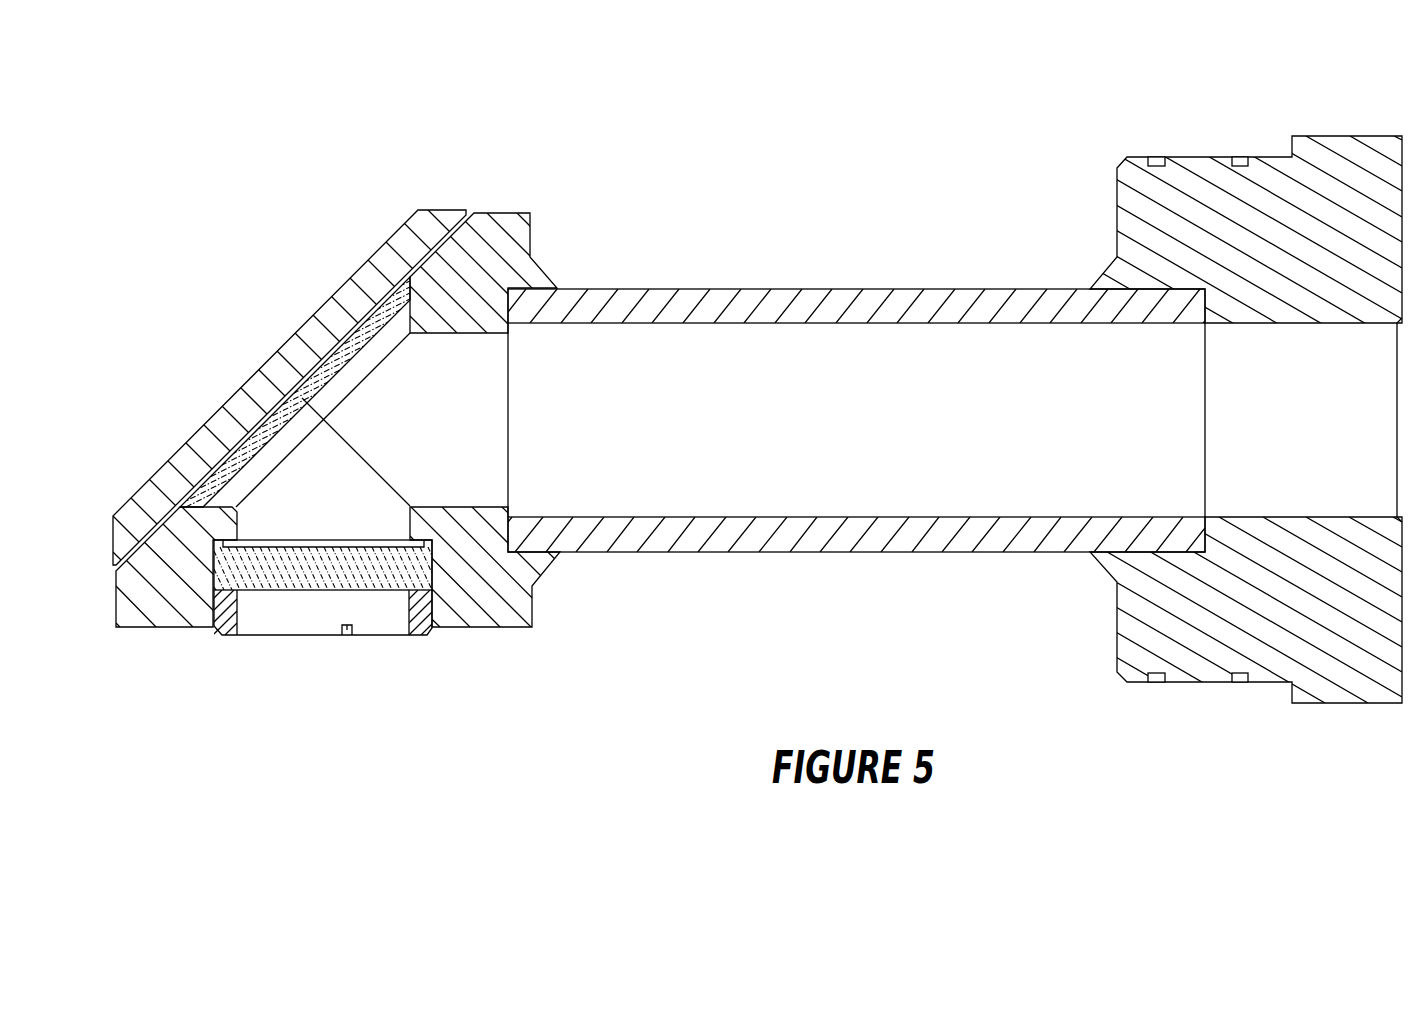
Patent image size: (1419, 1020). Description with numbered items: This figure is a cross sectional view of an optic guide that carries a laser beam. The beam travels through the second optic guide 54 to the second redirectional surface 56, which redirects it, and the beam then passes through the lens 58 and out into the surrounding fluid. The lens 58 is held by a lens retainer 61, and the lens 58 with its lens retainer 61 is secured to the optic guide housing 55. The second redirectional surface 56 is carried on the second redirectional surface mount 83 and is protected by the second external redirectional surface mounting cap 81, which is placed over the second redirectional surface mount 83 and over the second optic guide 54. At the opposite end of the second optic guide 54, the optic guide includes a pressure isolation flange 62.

The second optic guide 54 is at (857, 288).
The optic guide housing 55 is at (157, 602).
The second redirectional surface 56 is at (340, 358).
The lens 58 is at (283, 578).
The lens retainer 61 is at (423, 625).
The pressure isolation flange 62 is at (1318, 185).
The second external redirectional surface mounting cap 81 is at (290, 360).
The second redirectional surface mount 83 is at (503, 240).